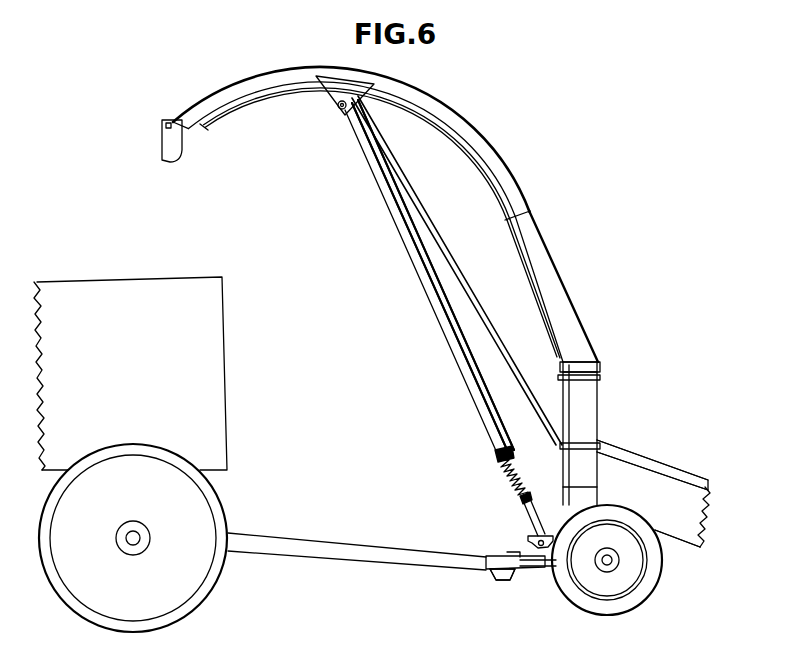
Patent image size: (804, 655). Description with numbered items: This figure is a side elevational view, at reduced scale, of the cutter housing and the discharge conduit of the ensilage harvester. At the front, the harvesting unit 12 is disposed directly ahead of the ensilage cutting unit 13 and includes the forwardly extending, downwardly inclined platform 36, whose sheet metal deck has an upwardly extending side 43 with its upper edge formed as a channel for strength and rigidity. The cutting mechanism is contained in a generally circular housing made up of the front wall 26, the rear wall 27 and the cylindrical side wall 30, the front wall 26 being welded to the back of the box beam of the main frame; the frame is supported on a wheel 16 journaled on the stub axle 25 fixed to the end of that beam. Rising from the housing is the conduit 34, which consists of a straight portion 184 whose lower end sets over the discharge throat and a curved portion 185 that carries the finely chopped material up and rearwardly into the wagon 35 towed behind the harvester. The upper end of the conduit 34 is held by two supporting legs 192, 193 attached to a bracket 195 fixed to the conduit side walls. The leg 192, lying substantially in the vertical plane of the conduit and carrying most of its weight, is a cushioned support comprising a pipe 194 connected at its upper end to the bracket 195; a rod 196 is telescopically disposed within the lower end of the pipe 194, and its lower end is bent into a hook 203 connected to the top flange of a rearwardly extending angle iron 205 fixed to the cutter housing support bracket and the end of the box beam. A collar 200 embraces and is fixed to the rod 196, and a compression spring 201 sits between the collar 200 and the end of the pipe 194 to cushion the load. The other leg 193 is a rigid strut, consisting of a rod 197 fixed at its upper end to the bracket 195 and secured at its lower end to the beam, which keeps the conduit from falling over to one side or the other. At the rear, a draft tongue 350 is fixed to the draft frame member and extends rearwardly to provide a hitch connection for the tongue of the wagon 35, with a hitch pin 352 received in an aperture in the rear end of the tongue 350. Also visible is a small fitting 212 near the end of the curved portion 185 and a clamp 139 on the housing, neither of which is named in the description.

The curved portion 185 is at (440, 88).
The conduit 34 is at (520, 171).
The straight portion 184 is at (583, 303).
The end bracket 212 is at (162, 145).
The bracket 195 is at (340, 100).
The rod 197 is at (423, 230).
The pipe 194 is at (418, 272).
The supporting leg 192 is at (429, 336).
The supporting leg 193 is at (493, 328).
The cylindrical side wall 30 is at (583, 394).
The ensilage cutting unit 13 is at (608, 420).
The clamp bracket 139 is at (599, 368).
The rear wall 27 is at (560, 378).
The front wall 26 is at (598, 433).
The harvesting unit 12 is at (687, 461).
The side 43 is at (702, 505).
The platform 36 is at (700, 548).
The wheel 16 is at (659, 580).
The stub axle 25 is at (608, 563).
The compression spring 201 is at (509, 478).
The collar 200 is at (524, 501).
The rod 196 is at (531, 520).
The hook 203 is at (530, 544).
The wagon 35 is at (236, 363).
The hitch pin 352 is at (500, 575).
The angle iron 205 is at (540, 570).
The draft tongue 350 is at (520, 580).